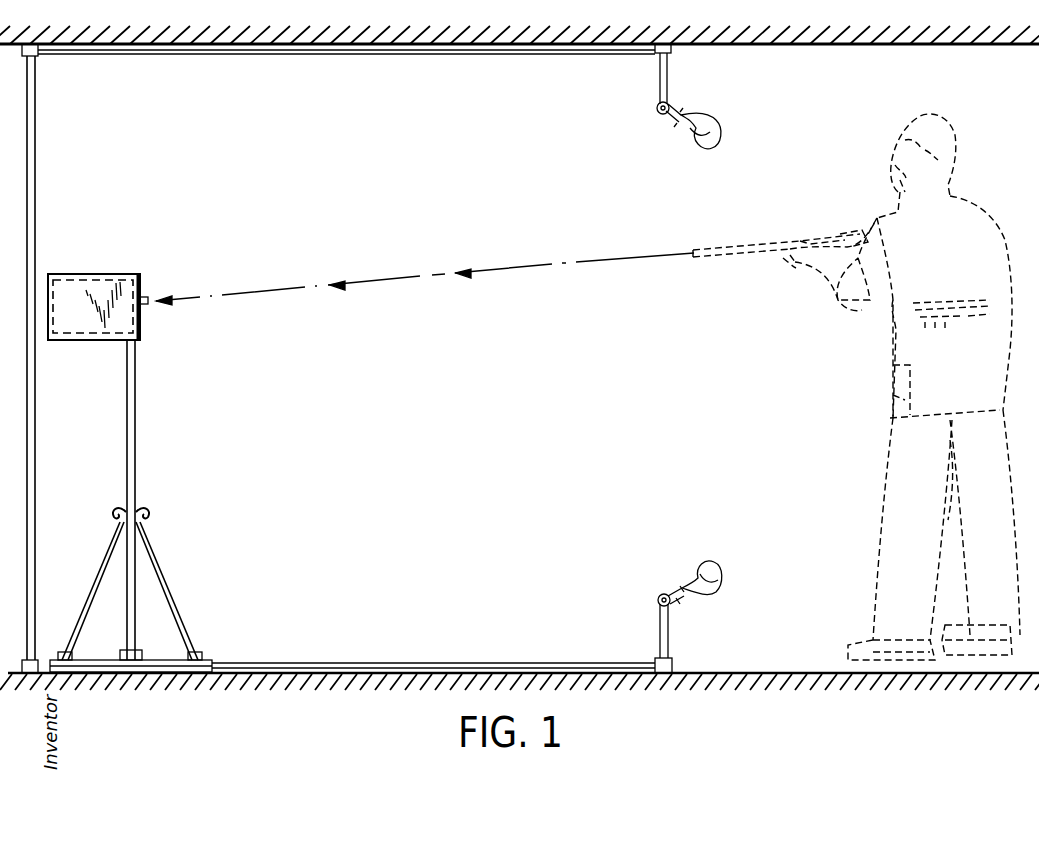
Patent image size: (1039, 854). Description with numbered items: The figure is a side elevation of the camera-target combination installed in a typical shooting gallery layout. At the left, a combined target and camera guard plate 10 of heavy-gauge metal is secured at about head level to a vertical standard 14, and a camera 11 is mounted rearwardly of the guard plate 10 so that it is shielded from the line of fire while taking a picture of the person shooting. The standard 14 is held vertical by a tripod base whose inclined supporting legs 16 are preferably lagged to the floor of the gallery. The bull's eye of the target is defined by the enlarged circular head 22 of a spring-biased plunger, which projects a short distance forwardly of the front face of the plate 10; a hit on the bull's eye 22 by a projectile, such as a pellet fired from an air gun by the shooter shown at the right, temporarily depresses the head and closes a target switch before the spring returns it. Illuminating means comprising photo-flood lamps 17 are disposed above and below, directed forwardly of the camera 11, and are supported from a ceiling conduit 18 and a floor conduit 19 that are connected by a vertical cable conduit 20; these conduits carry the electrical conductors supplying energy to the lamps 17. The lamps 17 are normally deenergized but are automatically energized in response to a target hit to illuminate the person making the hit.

The combined target and camera guard plate 10 is at (127, 319).
The camera 11 is at (85, 318).
The standard 14 is at (130, 417).
The inclined supporting legs 16 is at (88, 605).
The photo-flood lamps 17 is at (705, 150).
The ceiling conduit 18 is at (355, 55).
The floor conduit 19 is at (455, 668).
The vertical cable conduit 20 is at (30, 485).
The enlarged circular head of plunger 22 is at (147, 297).